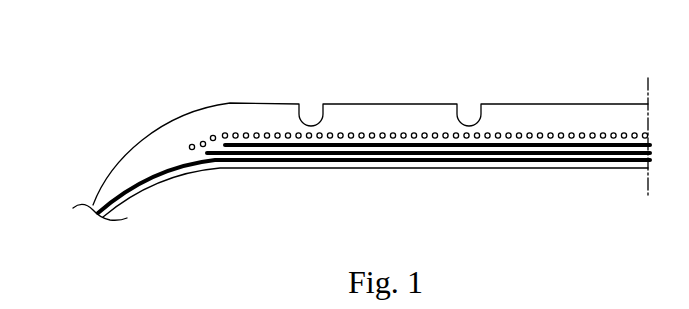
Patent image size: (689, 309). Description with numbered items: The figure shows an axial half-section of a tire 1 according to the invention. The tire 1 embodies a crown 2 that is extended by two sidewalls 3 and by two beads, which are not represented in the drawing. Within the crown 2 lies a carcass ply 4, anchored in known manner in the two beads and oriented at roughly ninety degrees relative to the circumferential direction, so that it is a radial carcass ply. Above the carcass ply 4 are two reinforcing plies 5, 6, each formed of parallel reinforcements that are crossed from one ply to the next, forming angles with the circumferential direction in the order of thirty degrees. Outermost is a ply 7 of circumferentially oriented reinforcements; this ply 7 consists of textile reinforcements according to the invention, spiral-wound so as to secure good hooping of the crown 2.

The tire 1 is at (174, 84).
The crown 2 is at (408, 118).
The sidewall 3 is at (93, 203).
The carcass ply 4 is at (180, 163).
The reinforcing ply 5 is at (350, 157).
The reinforcing ply 6 is at (538, 147).
The ply of circumferentially oriented reinforcements 7 is at (532, 135).